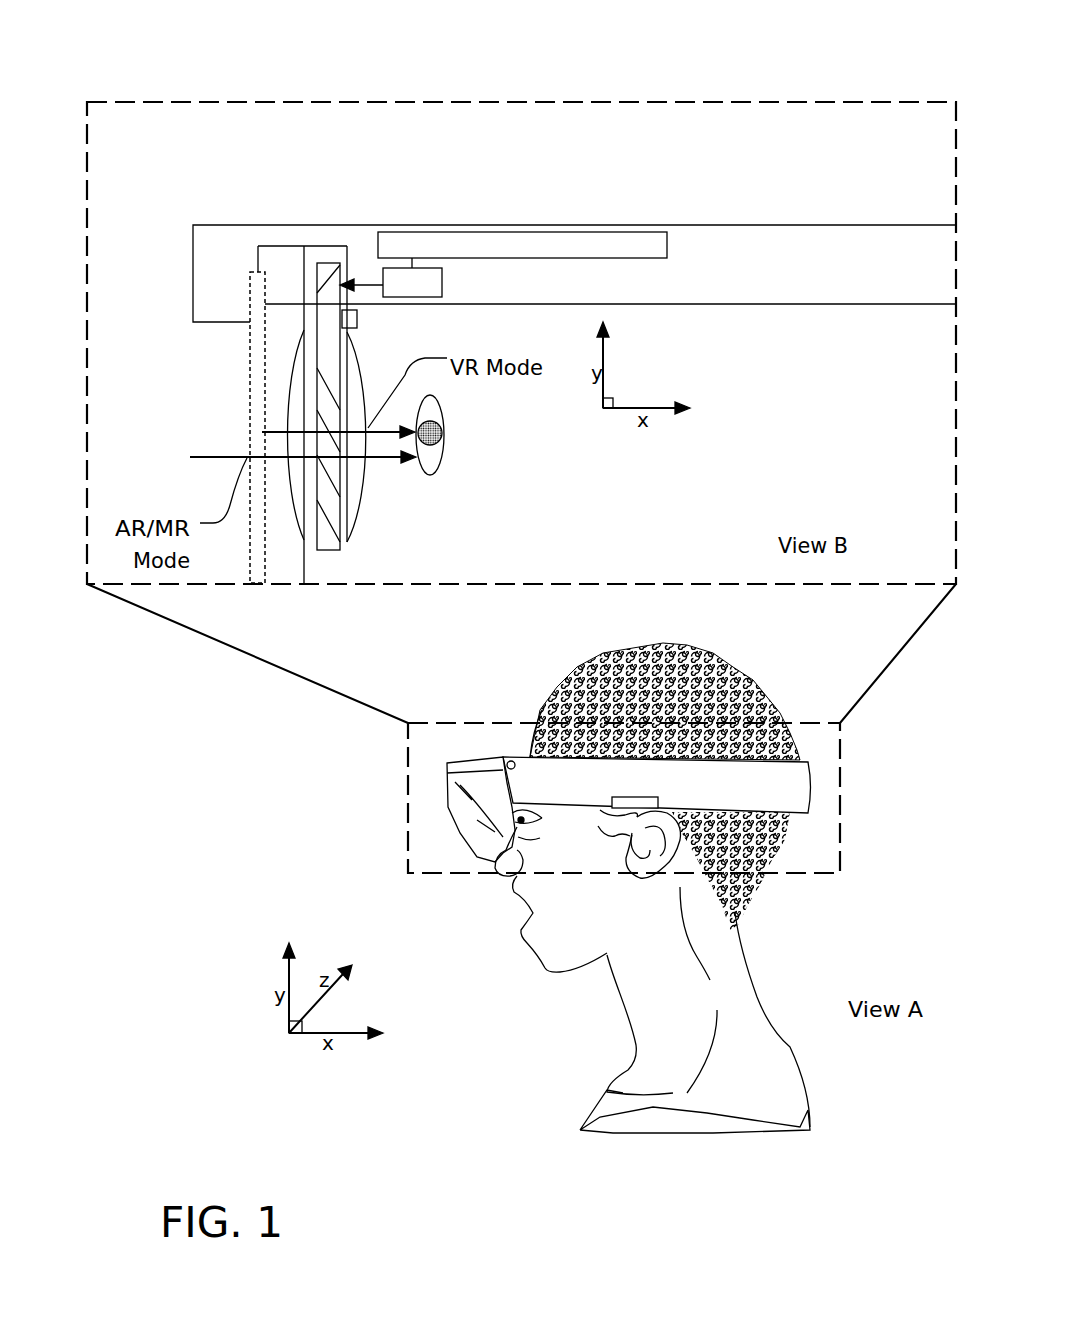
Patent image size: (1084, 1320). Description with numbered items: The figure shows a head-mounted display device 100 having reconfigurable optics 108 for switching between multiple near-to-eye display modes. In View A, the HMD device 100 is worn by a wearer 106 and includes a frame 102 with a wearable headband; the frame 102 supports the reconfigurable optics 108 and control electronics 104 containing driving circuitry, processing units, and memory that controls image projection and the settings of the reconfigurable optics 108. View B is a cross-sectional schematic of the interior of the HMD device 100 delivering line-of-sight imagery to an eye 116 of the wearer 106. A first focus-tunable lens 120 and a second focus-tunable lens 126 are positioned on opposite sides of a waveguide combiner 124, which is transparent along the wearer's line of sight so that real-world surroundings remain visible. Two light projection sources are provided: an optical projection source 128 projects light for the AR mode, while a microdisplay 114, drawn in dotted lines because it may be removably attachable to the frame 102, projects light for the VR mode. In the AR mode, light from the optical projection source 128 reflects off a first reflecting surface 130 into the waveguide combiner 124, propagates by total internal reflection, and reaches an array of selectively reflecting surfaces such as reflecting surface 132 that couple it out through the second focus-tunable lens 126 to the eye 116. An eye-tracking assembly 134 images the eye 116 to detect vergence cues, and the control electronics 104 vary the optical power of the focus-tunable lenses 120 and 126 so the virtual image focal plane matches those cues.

The head-mounted display device 100 is at (130, 57).
The frame 102 is at (222, 225).
The control electronics 104 is at (522, 245).
The wearer 106 is at (773, 1013).
The reconfigurable optics 108 is at (490, 396).
The microdisplay 114 is at (250, 373).
The eye 116 is at (438, 468).
The first focus-tunable lens 120 is at (357, 500).
The waveguide combiner 124 is at (325, 550).
The second focus-tunable lens 126 is at (296, 520).
The optical projection source 128 is at (391, 277).
The first reflecting surface 130 is at (340, 265).
The reflecting surface 132 is at (340, 410).
The eye-tracking assembly 134 is at (357, 319).